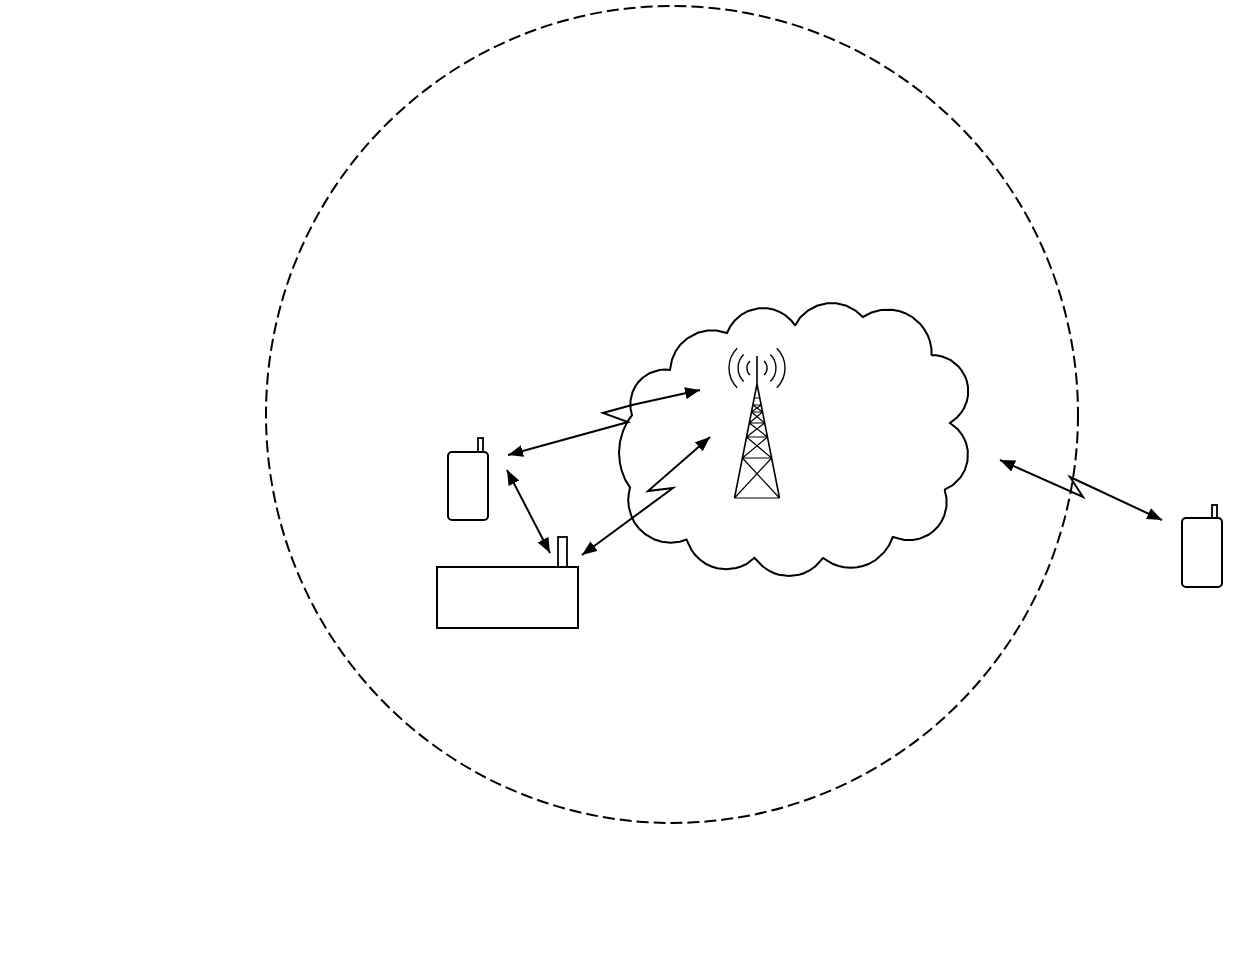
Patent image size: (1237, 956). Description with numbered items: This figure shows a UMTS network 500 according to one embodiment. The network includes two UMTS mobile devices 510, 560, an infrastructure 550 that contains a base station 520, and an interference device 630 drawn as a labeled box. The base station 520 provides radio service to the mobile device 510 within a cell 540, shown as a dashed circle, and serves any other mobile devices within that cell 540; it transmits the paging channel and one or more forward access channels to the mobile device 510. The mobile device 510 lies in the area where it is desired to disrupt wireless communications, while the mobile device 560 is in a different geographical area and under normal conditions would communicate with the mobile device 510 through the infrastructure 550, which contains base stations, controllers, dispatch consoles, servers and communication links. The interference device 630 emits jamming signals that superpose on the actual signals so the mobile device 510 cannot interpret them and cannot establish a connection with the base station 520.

The UMTS network 500 is at (1181, 726).
The UMTS mobile device 510 is at (448, 486).
The base station 520 is at (761, 410).
The cell 540 is at (266, 418).
The infrastructure 550 is at (793, 439).
The UMTS mobile device 560 is at (1182, 553).
The interference device 630 is at (579, 597).